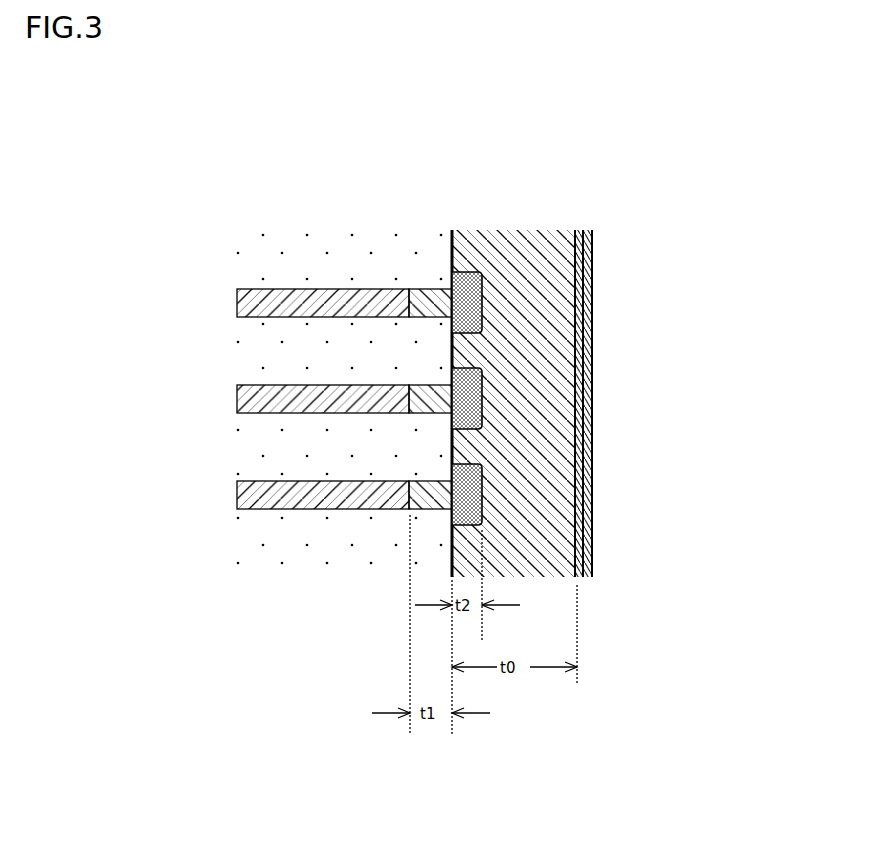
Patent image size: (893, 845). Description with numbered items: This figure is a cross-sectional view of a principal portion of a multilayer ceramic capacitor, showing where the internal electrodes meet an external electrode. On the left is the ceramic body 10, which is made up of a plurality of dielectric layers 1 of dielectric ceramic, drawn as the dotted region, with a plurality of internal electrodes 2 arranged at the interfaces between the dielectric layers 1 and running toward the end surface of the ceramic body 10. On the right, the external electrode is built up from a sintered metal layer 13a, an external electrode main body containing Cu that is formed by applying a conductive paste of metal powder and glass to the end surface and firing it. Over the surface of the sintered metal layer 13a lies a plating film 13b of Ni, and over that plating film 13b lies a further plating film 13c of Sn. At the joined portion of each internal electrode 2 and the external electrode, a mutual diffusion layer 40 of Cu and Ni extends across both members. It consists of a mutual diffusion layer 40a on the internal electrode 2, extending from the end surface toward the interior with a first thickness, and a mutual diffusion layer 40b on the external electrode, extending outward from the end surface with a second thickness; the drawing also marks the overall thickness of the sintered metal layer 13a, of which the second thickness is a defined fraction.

The dielectric layer 1 is at (330, 352).
The internal electrode 2 is at (293, 288).
The ceramic body 10 is at (255, 583).
The sintered metal layer 13a is at (548, 268).
The plating film 13b is at (583, 336).
The plating film 13c is at (593, 431).
The mutual diffusion layer 40 is at (470, 300).
The mutual diffusion layer 40a is at (431, 288).
The mutual diffusion layer 40b is at (465, 272).